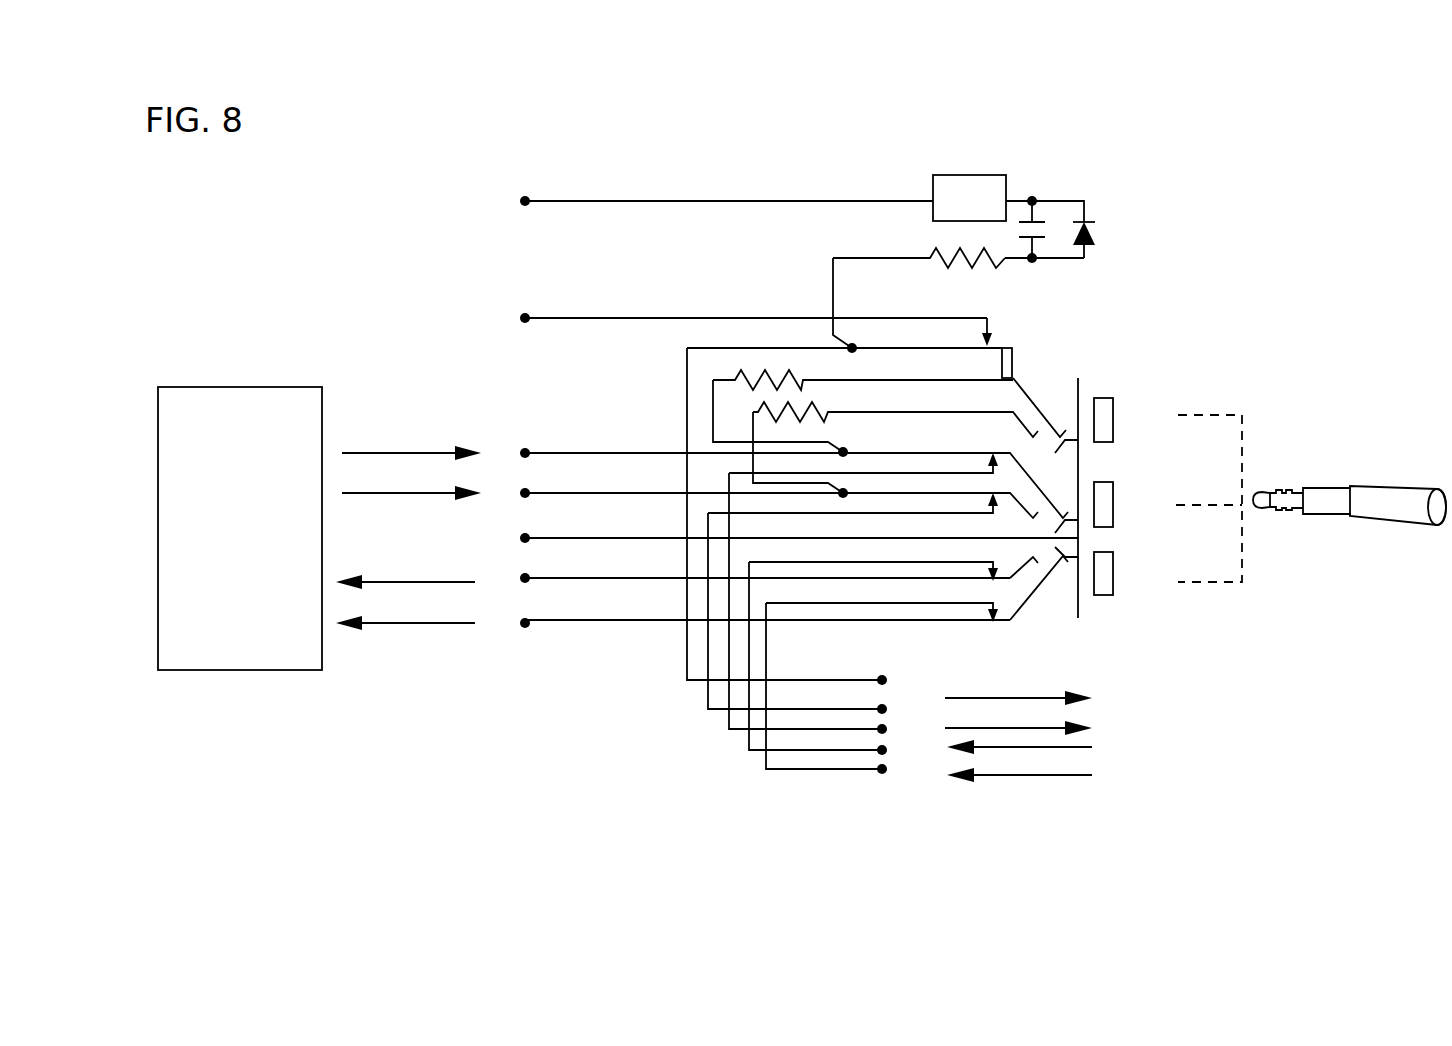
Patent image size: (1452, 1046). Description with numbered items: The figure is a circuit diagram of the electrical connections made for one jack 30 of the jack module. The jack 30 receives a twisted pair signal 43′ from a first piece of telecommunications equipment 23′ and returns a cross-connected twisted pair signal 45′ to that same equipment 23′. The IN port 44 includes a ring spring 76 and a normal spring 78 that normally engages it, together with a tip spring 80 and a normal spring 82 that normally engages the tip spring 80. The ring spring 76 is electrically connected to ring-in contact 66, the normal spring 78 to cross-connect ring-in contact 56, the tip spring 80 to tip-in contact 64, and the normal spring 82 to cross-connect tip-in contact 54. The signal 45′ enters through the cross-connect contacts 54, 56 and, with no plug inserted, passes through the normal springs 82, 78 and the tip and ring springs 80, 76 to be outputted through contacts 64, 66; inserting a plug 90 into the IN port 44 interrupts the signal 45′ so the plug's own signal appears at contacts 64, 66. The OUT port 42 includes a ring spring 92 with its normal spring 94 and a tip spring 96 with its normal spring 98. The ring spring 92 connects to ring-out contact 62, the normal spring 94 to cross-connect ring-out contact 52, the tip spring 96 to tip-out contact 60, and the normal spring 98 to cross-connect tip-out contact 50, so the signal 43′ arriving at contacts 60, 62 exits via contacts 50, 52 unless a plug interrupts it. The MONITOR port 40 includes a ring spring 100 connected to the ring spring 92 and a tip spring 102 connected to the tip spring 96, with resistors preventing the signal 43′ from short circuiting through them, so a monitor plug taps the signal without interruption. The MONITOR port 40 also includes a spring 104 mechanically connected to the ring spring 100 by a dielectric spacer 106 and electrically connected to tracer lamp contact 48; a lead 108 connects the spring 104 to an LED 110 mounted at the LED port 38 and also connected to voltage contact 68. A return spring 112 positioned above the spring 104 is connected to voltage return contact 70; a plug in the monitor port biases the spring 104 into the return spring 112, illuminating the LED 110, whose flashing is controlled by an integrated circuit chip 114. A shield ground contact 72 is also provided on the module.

The first piece of telecommunications equipment 23′ is at (237, 671).
The jack 30 is at (827, 188).
The LED port 38 is at (1132, 200).
The MONITOR port 40 is at (1102, 398).
The OUT port 42 is at (1102, 482).
The twisted pair signal 43′ is at (352, 453).
The IN port 44 is at (1102, 552).
The cross-connected twisted pair signal 45′ is at (380, 582).
The tracer lamp contact 48 is at (882, 680).
The cross-connect tip-out contact 50 is at (882, 709).
The cross-connect ring-out contact 52 is at (882, 729).
The cross-connect tip-in contact 54 is at (882, 750).
The cross-connect ring-in contact 56 is at (882, 769).
The tip-out contact 60 is at (528, 490).
The ring-out contact 62 is at (528, 450).
The tip-in contact 64 is at (528, 575).
The ring-in contact 66 is at (528, 620).
The voltage contact 68 is at (528, 198).
The voltage return contact 70 is at (528, 315).
The shield ground contact 72 is at (528, 535).
The ring spring 76 is at (1020, 602).
The normal spring 78 is at (957, 603).
The tip spring 80 is at (1017, 570).
The normal spring 82 is at (897, 560).
The plug 90 is at (1368, 488).
The ring spring 92 is at (1027, 473).
The normal spring 94 is at (897, 475).
The tip spring 96 is at (1010, 500).
The normal spring 98 is at (895, 515).
The ring spring 100 is at (1037, 412).
The tip spring 102 is at (893, 412).
The spring 104 is at (900, 350).
The dielectric spacer 106 is at (1013, 357).
The lead 108 is at (830, 300).
The LED 110 is at (1092, 233).
The return spring 112 is at (932, 317).
The integrated circuit chip 114 is at (960, 173).